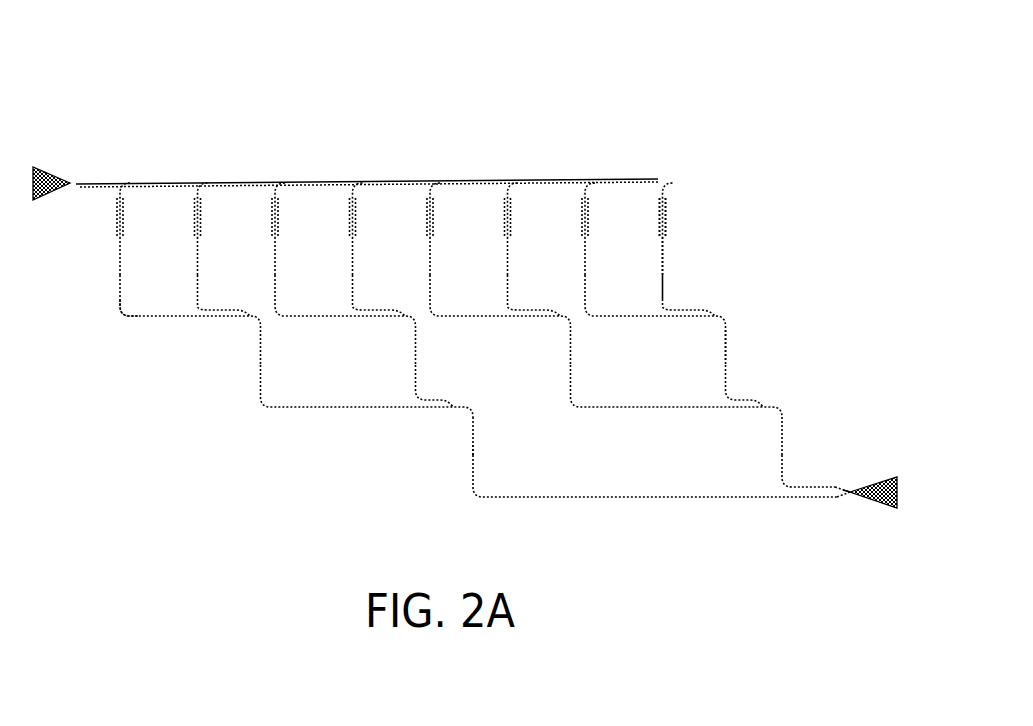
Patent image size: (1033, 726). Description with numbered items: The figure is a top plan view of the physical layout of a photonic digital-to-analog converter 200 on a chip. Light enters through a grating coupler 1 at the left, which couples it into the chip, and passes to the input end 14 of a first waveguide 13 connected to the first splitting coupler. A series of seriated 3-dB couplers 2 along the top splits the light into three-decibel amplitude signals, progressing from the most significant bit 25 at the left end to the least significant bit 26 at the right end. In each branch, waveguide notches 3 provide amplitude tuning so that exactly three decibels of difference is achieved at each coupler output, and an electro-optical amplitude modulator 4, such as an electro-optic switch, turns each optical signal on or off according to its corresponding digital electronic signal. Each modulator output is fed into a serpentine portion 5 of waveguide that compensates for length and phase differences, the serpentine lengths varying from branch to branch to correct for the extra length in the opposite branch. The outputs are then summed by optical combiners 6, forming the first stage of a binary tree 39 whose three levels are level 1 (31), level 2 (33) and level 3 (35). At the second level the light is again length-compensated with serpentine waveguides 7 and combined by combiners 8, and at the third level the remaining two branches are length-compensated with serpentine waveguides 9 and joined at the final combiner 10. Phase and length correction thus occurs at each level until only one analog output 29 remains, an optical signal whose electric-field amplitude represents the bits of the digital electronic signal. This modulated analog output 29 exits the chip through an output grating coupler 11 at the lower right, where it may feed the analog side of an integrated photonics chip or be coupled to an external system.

The digital-to-analog converter 200 is at (490, 43).
The grating coupler 1 is at (57, 163).
The input end 14 is at (88, 189).
The most significant bit 25 is at (100, 127).
The least significant bit 26 is at (659, 160).
The 3-dB coupler 2 is at (250, 172).
The waveguide notch 3 is at (108, 193).
The electro-optical amplitude modulator 4 is at (110, 231).
The serpentine portion 5 is at (110, 279).
The optical combiner 6 is at (222, 325).
The serpentine waveguide 7 is at (247, 381).
The combiner 8 is at (438, 420).
The serpentine waveguide 9 is at (465, 465).
The final combiner 10 is at (832, 500).
The output grating coupler 11 is at (872, 474).
The first waveguide 13 is at (128, 329).
The analog output 29 is at (845, 484).
The binary tree 39 is at (673, 213).
The level 1 31 is at (686, 246).
The level 2 33 is at (738, 343).
The level 3 35 is at (395, 462).